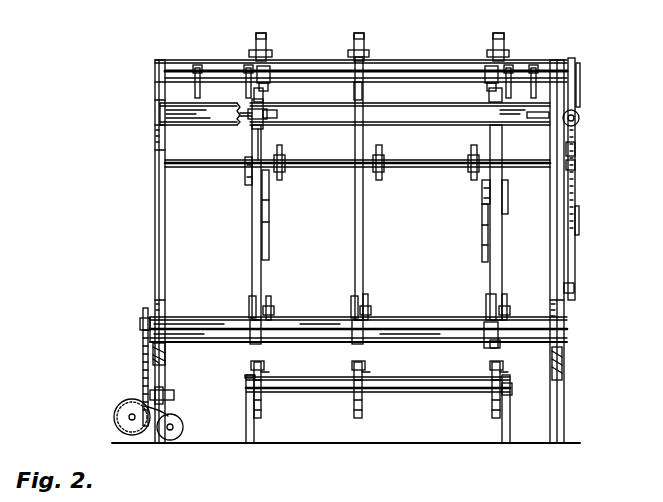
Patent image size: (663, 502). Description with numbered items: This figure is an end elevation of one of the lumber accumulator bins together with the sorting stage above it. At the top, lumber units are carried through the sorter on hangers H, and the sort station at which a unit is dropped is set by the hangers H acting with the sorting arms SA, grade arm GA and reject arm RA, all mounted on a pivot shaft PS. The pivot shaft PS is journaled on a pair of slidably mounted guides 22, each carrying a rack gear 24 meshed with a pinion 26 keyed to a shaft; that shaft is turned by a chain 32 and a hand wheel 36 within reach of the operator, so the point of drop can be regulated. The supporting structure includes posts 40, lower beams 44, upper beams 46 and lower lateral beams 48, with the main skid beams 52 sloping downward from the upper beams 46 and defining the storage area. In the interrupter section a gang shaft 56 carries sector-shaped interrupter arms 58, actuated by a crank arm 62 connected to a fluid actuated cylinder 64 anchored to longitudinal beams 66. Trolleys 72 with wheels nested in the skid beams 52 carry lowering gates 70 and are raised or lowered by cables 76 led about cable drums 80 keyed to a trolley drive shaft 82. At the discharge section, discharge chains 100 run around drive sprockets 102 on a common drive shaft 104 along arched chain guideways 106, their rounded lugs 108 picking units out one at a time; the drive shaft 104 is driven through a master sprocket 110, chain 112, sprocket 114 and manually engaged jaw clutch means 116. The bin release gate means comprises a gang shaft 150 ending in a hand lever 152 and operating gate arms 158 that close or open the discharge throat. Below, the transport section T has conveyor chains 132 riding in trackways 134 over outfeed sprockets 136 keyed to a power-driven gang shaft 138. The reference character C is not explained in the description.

The pinion 26 is at (242, 69).
The rack gear 24 is at (268, 66).
The slidably mounted guide 22 is at (270, 83).
The hanger H is at (263, 39).
The pivot shaft PS is at (219, 71).
The grade arm GA is at (196, 97).
The sorting arm SA is at (247, 97).
The reject arm RA is at (544, 81).
The clutch C is at (586, 93).
The chain 32 is at (574, 62).
The fluid actuated cylinder 64 is at (573, 163).
The beam 66 is at (574, 183).
The hand wheel 36 is at (579, 233).
The crank arm 62 is at (562, 159).
The hand lever 152 is at (572, 287).
The post 40 is at (161, 204).
The upper beam 46 is at (322, 120).
The cable drum 80 is at (256, 132).
The trolley drive shaft 82 is at (279, 119).
The cable 76 is at (258, 146).
The gang shaft 56 is at (416, 162).
The interrupter arm 58 is at (280, 154).
The main skid beam 52 is at (249, 241).
The trolley 72 is at (247, 196).
The lowering gate 70 is at (269, 244).
The gang shaft 150 is at (313, 269).
The lower lateral beam 48 is at (390, 324).
The chain guideway 106 is at (251, 310).
The gate arm 158 is at (272, 307).
The lug 108 is at (486, 313).
The drive sprocket 102 is at (258, 344).
The drive shaft 104 is at (309, 343).
The discharge chain 100 is at (479, 350).
The master sprocket 110 is at (142, 323).
The chain 112 is at (142, 354).
The sprocket 114 is at (142, 398).
The jaw clutch means 116 is at (164, 396).
The lower beam 44 is at (165, 348).
The gang shaft 138 is at (304, 394).
The conveyor chain 132 is at (266, 402).
The trackway 134 is at (251, 366).
The outfeed sprocket 136 is at (264, 379).
The transport section T is at (392, 417).